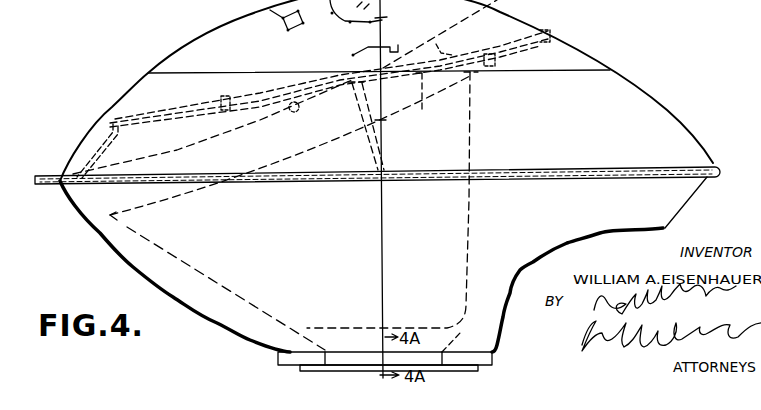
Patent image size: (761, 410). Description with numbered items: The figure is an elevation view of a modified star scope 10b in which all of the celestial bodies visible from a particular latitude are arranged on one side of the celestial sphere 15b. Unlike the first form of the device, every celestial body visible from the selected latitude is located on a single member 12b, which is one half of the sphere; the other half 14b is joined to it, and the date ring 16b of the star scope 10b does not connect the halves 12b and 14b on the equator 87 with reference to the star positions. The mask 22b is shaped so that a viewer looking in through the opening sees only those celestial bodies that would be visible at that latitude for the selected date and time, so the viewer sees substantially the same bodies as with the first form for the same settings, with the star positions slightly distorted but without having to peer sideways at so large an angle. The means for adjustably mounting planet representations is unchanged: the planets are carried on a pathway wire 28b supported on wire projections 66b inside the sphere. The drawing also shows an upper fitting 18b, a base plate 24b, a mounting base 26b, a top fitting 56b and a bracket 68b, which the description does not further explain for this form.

The modification of the star scope 10b is at (677, 114).
The single member 12b is at (632, 82).
The half 14b is at (226, 327).
The celestial sphere 15b is at (101, 108).
The date ring 16b is at (720, 160).
The upper fitting 18b is at (292, 32).
The mask 22b is at (468, 237).
The base plate 24b is at (313, 372).
The mounting base 26b is at (493, 352).
The pathway wire 28b is at (397, 121).
The top fitting 56b is at (140, 5).
The wire projections 66b is at (378, 186).
The upper bracket 68b is at (436, 44).
The equator 87 is at (207, 76).